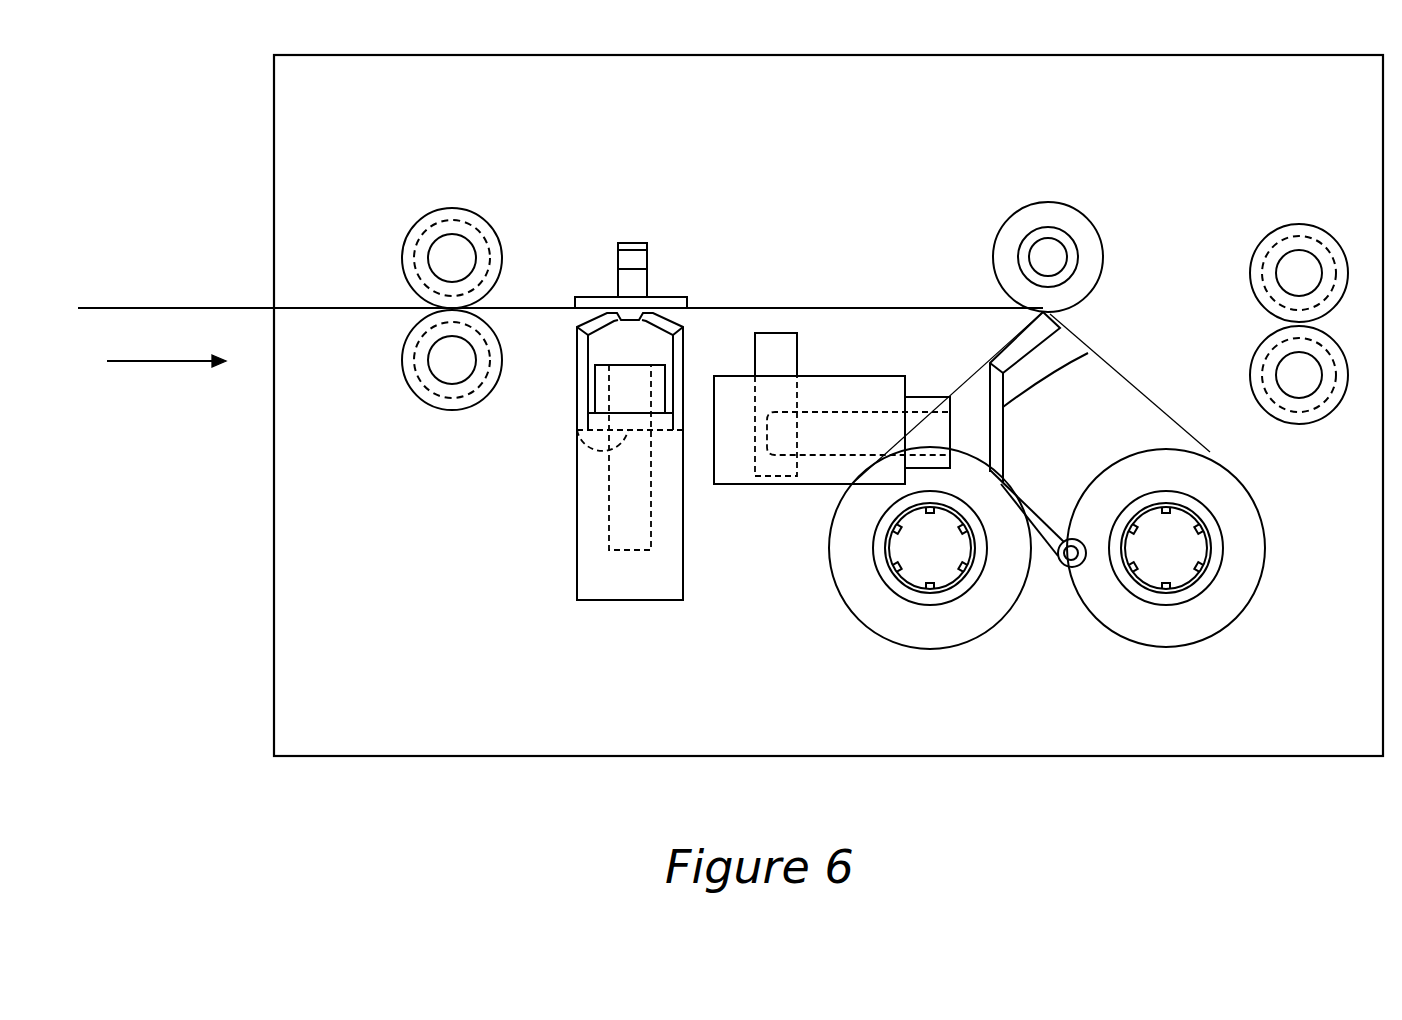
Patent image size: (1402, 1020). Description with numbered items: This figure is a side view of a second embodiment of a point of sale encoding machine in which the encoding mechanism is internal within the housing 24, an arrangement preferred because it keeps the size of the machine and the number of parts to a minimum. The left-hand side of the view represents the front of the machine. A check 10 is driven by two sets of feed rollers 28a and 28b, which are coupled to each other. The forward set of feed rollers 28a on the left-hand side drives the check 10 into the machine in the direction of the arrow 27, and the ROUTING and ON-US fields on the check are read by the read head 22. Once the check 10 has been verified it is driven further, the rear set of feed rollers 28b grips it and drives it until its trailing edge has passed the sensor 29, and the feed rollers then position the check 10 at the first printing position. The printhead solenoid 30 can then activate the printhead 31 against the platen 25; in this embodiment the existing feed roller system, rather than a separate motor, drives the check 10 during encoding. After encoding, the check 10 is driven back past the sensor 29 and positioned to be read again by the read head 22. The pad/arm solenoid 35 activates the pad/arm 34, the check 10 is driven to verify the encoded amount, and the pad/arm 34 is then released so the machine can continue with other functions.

The check 10 is at (147, 307).
The read head 22 is at (577, 372).
The housing 24 is at (890, 55).
The platen 25 is at (1048, 202).
The arrow 27 is at (144, 362).
The forward set of feed rollers 28a is at (452, 208).
The rear set of feed rollers 28b is at (1301, 224).
The sensor 29 is at (777, 333).
The printhead solenoid 30 is at (725, 485).
The printhead 31 is at (1088, 353).
The pad/arm 34 is at (633, 243).
The pad/arm solenoid 35 is at (660, 600).